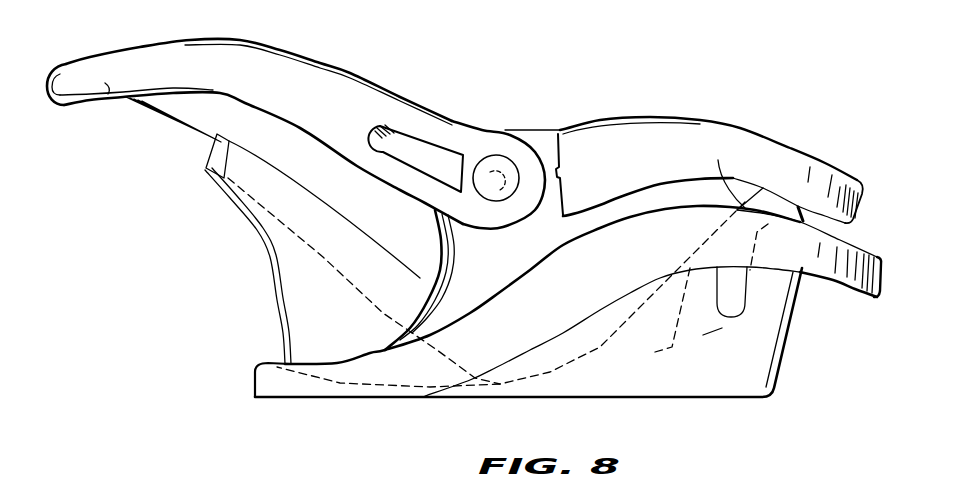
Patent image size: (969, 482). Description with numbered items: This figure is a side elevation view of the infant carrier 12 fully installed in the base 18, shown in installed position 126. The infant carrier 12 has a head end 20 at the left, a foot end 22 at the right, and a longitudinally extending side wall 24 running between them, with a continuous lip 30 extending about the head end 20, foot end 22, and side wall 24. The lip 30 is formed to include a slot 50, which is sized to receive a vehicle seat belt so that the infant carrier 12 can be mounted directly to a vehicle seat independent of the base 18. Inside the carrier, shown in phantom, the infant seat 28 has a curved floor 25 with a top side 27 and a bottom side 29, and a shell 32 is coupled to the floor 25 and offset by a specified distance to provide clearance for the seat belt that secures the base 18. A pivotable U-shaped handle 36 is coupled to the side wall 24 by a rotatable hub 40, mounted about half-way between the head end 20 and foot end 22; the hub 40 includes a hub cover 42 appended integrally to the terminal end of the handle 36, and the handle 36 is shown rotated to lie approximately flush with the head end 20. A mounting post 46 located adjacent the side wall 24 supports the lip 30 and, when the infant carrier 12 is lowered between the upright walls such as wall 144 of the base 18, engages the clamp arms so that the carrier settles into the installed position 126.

The infant carrier 12 is at (780, 133).
The base 18 is at (247, 382).
The head end 20 is at (143, 103).
The foot end 22 is at (843, 180).
The side wall 24 is at (337, 183).
The floor 25 is at (718, 160).
The top side 27 is at (228, 178).
The infant seat 28 is at (290, 218).
The bottom side 29 is at (323, 257).
The lip 30 is at (427, 120).
The shell 32 is at (310, 288).
The handle 36 is at (110, 87).
The hub 40 is at (520, 153).
The hub cover 42 is at (490, 170).
The mounting post 46 is at (499, 202).
The slot 50 is at (587, 123).
The installed position 126 is at (573, 97).
The upright wall 144 is at (470, 218).